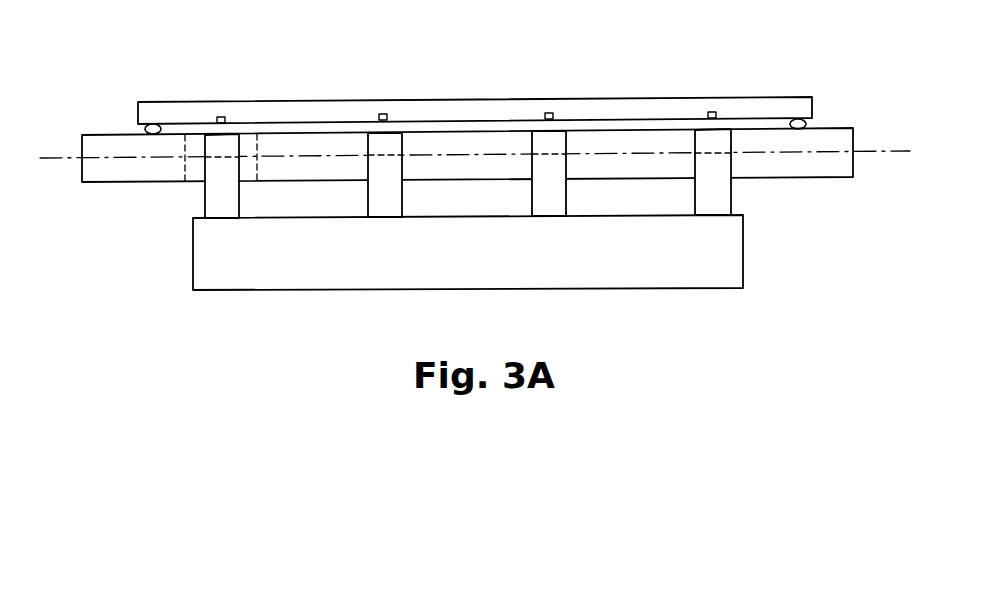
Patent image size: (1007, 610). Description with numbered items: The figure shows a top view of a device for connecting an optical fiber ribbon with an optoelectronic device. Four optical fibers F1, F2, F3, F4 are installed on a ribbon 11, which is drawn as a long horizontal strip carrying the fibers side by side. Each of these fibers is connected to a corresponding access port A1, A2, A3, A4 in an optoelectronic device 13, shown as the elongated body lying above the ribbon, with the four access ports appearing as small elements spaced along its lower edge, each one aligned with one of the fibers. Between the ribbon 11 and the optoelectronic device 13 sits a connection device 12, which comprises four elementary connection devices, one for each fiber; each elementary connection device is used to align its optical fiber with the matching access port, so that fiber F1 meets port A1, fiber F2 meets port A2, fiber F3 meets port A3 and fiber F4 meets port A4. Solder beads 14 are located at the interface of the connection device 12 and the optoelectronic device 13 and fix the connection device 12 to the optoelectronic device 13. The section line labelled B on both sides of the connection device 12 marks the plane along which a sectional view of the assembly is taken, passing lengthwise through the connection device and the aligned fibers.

The ribbon 11 is at (225, 272).
The connection device 12 is at (833, 165).
The optoelectronic device 13 is at (764, 106).
The solder beads 14 is at (796, 113).
The optical fiber F1 is at (213, 201).
The optical fiber F2 is at (377, 195).
The optical fiber F3 is at (553, 193).
The optical fiber F4 is at (718, 192).
The access port A1 is at (220, 117).
The access port A2 is at (383, 114).
The access port A3 is at (549, 113).
The access port A4 is at (712, 112).
The section B— B is at (475, 142).